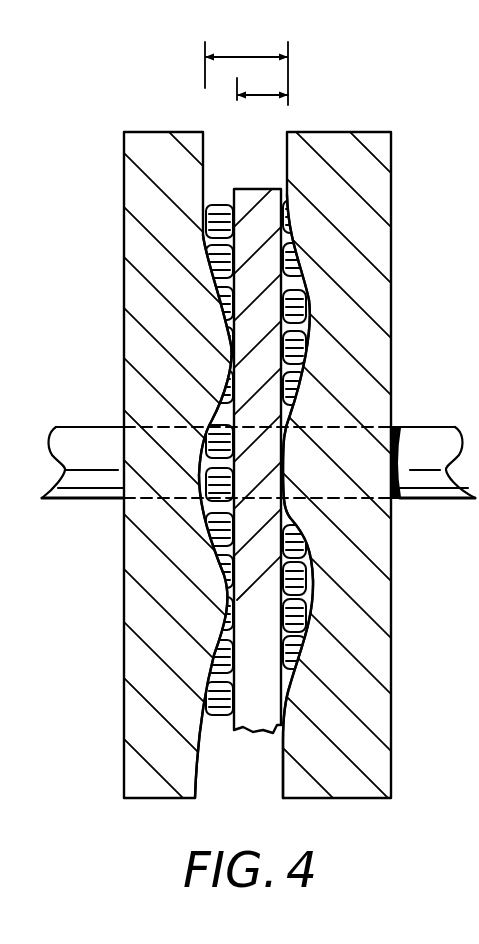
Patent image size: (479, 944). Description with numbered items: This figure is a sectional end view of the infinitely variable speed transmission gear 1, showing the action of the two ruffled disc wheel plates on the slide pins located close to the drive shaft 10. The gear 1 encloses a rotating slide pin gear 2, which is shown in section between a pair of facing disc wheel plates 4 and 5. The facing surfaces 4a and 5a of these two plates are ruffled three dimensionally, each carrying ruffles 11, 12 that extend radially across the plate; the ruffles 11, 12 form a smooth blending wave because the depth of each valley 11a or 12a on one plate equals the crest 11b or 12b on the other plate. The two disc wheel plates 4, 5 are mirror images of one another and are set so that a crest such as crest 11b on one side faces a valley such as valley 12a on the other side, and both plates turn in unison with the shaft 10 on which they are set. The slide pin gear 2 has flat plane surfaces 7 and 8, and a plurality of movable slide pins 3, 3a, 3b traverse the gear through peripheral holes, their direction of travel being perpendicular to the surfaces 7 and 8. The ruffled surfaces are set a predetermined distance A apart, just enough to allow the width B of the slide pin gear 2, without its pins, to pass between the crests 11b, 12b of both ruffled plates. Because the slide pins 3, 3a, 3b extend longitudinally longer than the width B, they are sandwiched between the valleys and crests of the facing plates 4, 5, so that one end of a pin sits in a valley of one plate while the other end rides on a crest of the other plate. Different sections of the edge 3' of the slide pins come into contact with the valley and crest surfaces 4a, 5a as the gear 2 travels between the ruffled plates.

The gear 1 is at (412, 158).
The slide pin gear 2 is at (253, 717).
The slide pin 3 is at (357, 563).
The edge of slide pin 3' is at (363, 534).
The slide pin 3a is at (305, 585).
The slide pin 3b is at (302, 614).
The disc wheel plate 4 is at (150, 132).
The undulating surface 4a is at (205, 166).
The disc wheel plate 5 is at (360, 132).
The undulating surface 5a is at (288, 157).
The flat plane surface 7 is at (232, 252).
The flat plane surface 8 is at (287, 240).
The drive shaft 10 is at (83, 477).
The ruffle 11 is at (230, 405).
The valley 11a is at (205, 442).
The crest 11b is at (228, 320).
The ruffle 12 is at (287, 388).
The valley 12a is at (303, 340).
The crest 12b is at (288, 450).
The predetermined distance A is at (246, 68).
The width of inner slide pin gear B is at (262, 83).